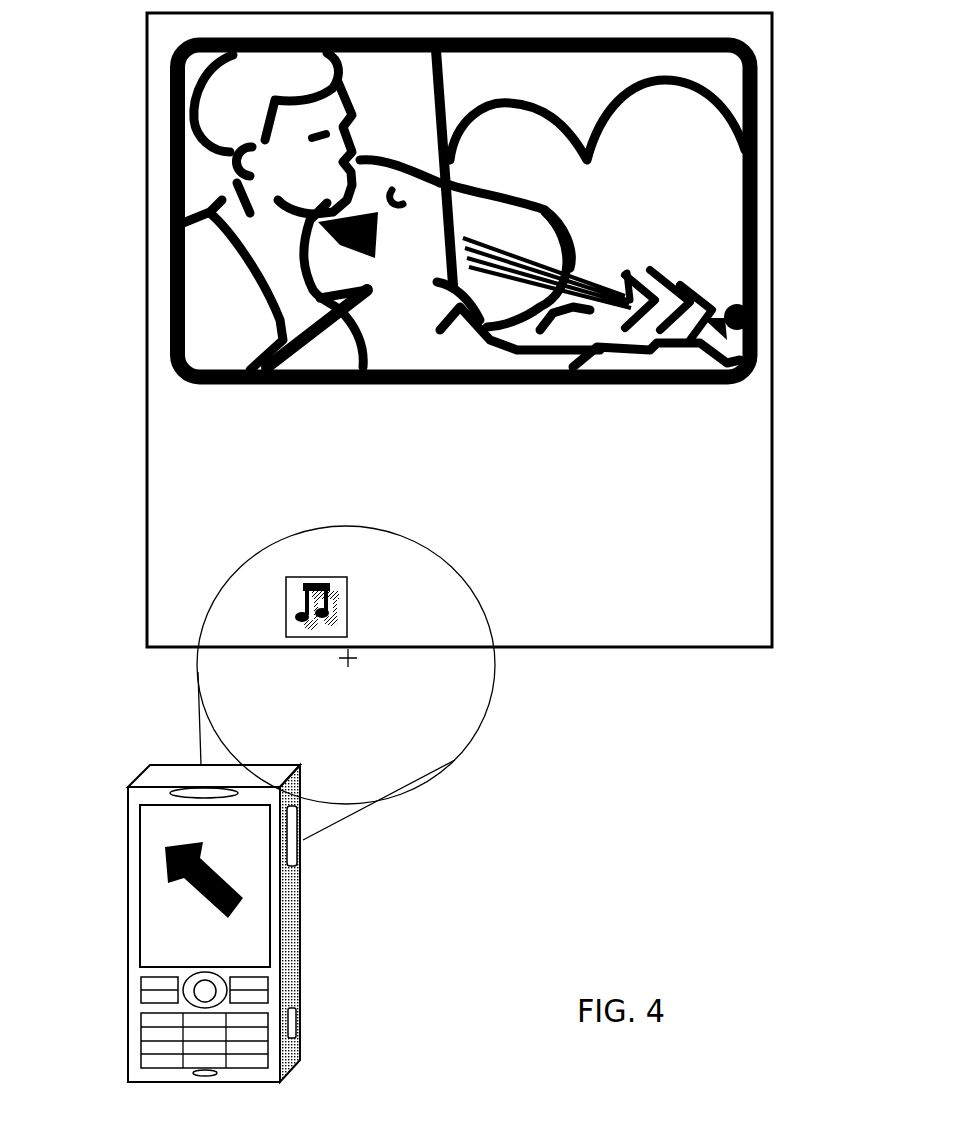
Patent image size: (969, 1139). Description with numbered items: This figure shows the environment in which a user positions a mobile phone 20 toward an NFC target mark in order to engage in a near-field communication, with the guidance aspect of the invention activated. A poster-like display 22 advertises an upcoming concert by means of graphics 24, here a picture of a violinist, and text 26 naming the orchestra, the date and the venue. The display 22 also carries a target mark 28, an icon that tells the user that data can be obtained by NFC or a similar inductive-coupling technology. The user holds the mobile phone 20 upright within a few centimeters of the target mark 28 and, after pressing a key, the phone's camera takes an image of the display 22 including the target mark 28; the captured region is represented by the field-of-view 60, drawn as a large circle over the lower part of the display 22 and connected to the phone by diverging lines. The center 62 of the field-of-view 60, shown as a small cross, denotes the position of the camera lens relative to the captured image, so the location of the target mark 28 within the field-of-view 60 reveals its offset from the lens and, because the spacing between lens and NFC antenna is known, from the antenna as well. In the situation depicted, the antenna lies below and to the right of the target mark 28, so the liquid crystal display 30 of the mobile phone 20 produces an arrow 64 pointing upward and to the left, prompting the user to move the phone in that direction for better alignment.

The mobile phone 20 is at (250, 923).
The display 22 is at (147, 510).
The graphics 24 is at (759, 237).
The text 26 is at (740, 519).
The target mark 28 is at (345, 622).
The liquid crystal display 30 is at (268, 942).
The field-of-view 60 is at (443, 772).
The center 62 is at (350, 662).
The arrow 64 is at (183, 883).